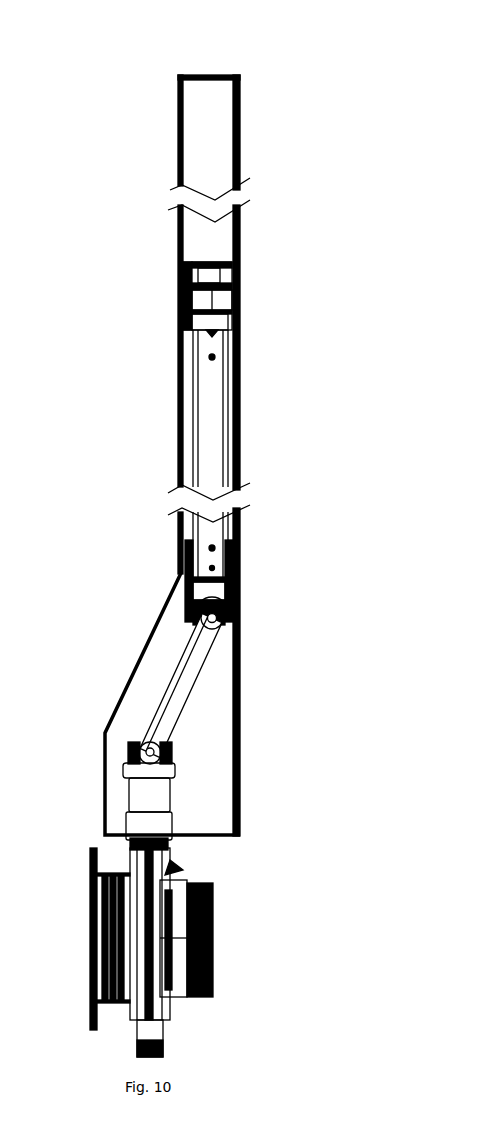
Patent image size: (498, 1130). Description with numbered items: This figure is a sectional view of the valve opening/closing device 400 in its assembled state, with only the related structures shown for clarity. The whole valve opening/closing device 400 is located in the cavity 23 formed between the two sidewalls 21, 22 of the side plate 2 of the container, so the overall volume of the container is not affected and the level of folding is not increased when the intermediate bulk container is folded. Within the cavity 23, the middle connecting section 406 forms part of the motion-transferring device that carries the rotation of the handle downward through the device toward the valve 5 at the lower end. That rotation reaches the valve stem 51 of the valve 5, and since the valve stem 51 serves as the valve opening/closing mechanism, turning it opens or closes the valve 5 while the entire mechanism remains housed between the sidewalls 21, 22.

The side plate 2 is at (252, 75).
The sidewall 21 is at (178, 356).
The sidewall 22 is at (240, 380).
The cavity 23 is at (212, 250).
The valve opening/closing device 400 is at (217, 447).
The middle connecting section 406 is at (173, 687).
The valve stem 51 is at (173, 840).
The valve 5 is at (217, 967).